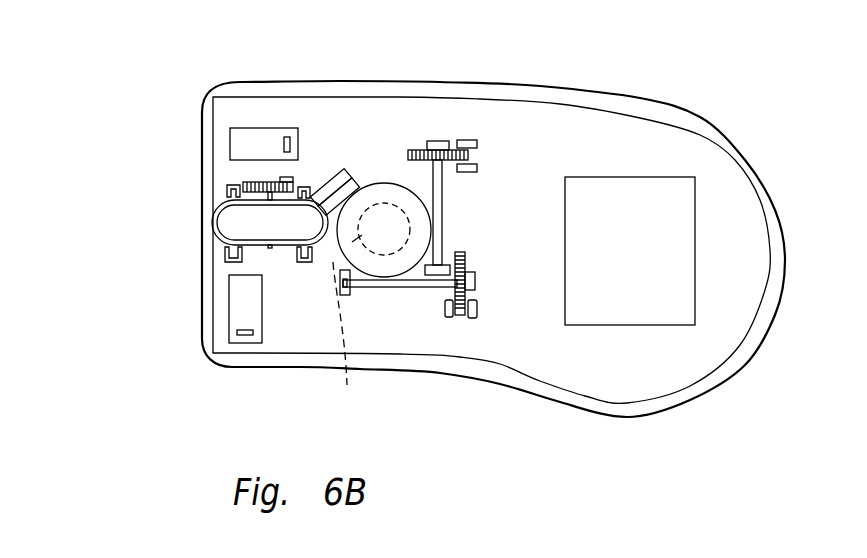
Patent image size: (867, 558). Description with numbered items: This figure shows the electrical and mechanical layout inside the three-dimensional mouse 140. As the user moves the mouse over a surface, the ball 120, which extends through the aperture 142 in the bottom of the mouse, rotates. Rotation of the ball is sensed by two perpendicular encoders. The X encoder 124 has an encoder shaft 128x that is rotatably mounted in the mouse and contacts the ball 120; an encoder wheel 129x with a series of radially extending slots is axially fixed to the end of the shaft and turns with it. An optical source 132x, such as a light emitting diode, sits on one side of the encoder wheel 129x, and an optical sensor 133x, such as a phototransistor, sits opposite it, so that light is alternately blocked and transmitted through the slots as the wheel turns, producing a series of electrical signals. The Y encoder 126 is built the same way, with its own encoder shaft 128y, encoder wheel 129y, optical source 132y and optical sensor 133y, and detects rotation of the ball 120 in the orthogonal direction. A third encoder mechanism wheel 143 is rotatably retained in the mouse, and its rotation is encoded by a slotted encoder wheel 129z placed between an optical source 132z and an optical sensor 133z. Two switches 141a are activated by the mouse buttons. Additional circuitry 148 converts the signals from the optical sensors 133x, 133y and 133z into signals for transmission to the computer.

The ball 120 is at (372, 198).
The X encoder 124 is at (491, 237).
The Y encoder 126 is at (492, 116).
The encoder shaft 128x is at (397, 289).
The encoder shaft 128y is at (443, 188).
The encoder wheel 129x is at (468, 253).
The encoder wheel 129y is at (422, 149).
The slotted encoder wheel 129z is at (240, 183).
The optical source 132x is at (455, 318).
The optical source 132y is at (478, 165).
The optical source 132z is at (292, 198).
The optical sensor 133x is at (477, 318).
The optical sensor 133y is at (478, 143).
The optical sensor 133z is at (281, 178).
The 3-D mouse 140 is at (145, 326).
The switches 141a is at (253, 128).
The aperture 142 is at (338, 334).
The third encoder mechanism wheel 143 is at (326, 187).
The additional circuitry 148 is at (642, 300).